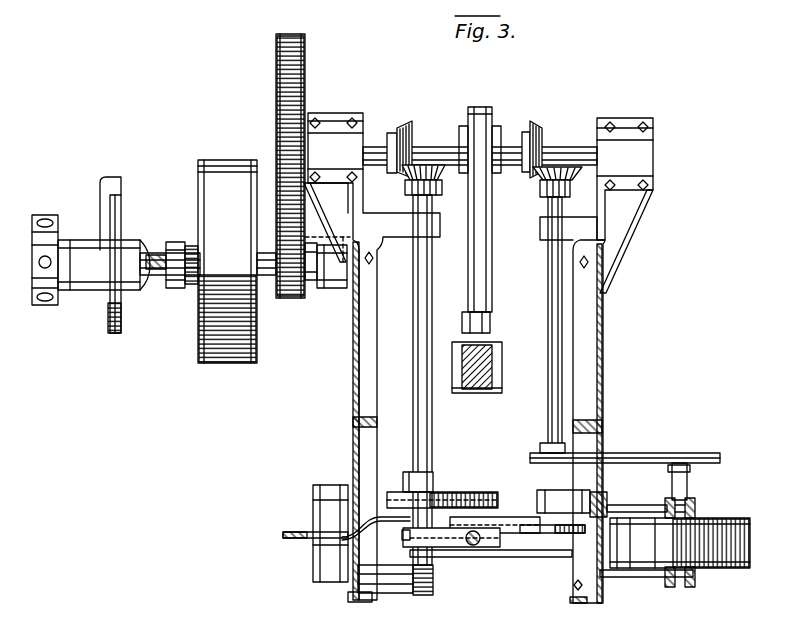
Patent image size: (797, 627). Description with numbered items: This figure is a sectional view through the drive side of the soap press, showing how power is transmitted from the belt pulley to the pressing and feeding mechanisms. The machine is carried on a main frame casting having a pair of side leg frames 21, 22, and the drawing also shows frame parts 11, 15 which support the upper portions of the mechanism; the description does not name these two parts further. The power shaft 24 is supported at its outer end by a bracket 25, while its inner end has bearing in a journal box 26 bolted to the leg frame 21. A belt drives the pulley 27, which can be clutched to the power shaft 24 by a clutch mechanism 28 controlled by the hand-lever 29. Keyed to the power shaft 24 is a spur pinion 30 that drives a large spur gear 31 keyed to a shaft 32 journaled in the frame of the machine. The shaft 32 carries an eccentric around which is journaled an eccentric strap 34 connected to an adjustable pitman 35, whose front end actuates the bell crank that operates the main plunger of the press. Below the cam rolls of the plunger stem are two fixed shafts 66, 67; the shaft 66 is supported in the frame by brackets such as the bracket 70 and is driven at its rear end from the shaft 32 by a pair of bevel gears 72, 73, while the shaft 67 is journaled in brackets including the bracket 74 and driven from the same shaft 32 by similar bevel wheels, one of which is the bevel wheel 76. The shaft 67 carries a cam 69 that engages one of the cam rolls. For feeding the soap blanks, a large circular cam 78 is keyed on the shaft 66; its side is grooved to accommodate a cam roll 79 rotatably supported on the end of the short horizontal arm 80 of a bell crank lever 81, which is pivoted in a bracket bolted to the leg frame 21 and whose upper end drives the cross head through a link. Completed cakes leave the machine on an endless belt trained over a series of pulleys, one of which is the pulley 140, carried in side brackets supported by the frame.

The frame 11 is at (405, 228).
The frame upright 15 is at (543, 240).
The side leg frame 21 is at (347, 597).
The side leg frame 22 is at (590, 604).
The power shaft 24 is at (268, 275).
The bracket 25 is at (172, 288).
The journal box 26 is at (338, 289).
The pulley 27 is at (230, 352).
The clutch mechanism 28 is at (153, 255).
The hand-lever 29 is at (125, 312).
The spur pinion 30 is at (308, 282).
The spur gear 31 is at (302, 75).
The shaft 32 is at (376, 142).
The eccentric strap 34 is at (483, 110).
The adjustable pitman 35 is at (491, 322).
The fixed shaft 66 is at (430, 420).
The fixed shaft 67 is at (548, 413).
The cam 69 is at (560, 535).
The bracket 70 is at (434, 583).
The bevel gear 72 is at (407, 124).
The bevel gear 73 is at (425, 163).
The bracket 74 is at (530, 500).
The bevel wheel 76 is at (537, 130).
The circular cam 78 is at (450, 492).
The cam roll 79 is at (616, 504).
The short horizontal arm 80 is at (375, 505).
The bell crank lever 81 is at (295, 530).
The pulley 140 is at (665, 556).